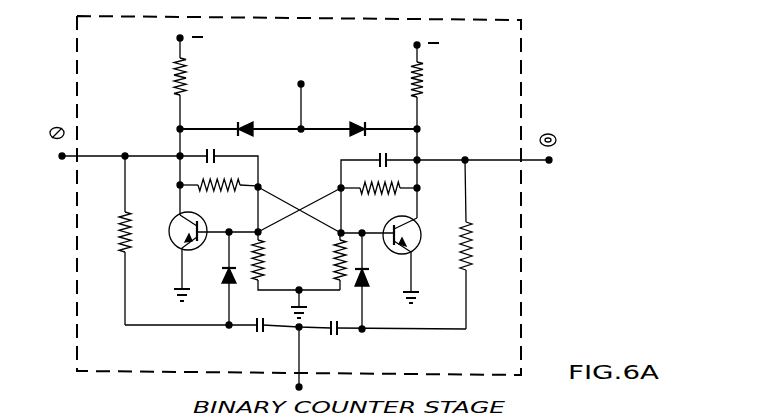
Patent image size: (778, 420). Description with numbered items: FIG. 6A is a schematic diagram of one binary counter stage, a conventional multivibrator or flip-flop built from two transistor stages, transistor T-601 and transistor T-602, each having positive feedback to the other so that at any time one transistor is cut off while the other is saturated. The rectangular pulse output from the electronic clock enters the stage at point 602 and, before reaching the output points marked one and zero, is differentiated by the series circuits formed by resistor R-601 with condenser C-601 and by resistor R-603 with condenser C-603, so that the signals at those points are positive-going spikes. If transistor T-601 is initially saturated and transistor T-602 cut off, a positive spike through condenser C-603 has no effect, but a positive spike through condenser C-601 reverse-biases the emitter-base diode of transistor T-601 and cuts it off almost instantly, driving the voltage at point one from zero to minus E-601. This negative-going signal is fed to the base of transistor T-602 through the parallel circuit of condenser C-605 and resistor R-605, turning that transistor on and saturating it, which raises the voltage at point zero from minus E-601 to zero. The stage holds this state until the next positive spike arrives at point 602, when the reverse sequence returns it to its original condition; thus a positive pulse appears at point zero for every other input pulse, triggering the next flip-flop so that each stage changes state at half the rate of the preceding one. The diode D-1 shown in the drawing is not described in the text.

The transistor T-601 is at (173, 222).
The transistor T-602 is at (388, 224).
The resistor R-601 is at (130, 250).
The resistor R-603 is at (472, 236).
The resistor R-605 is at (218, 192).
The condenser C-601 is at (254, 335).
The condenser C-603 is at (337, 335).
The condenser C-605 is at (214, 158).
The diode D-1 is at (246, 126).
The supply voltage E-601 is at (301, 84).
The input point 602 is at (302, 387).